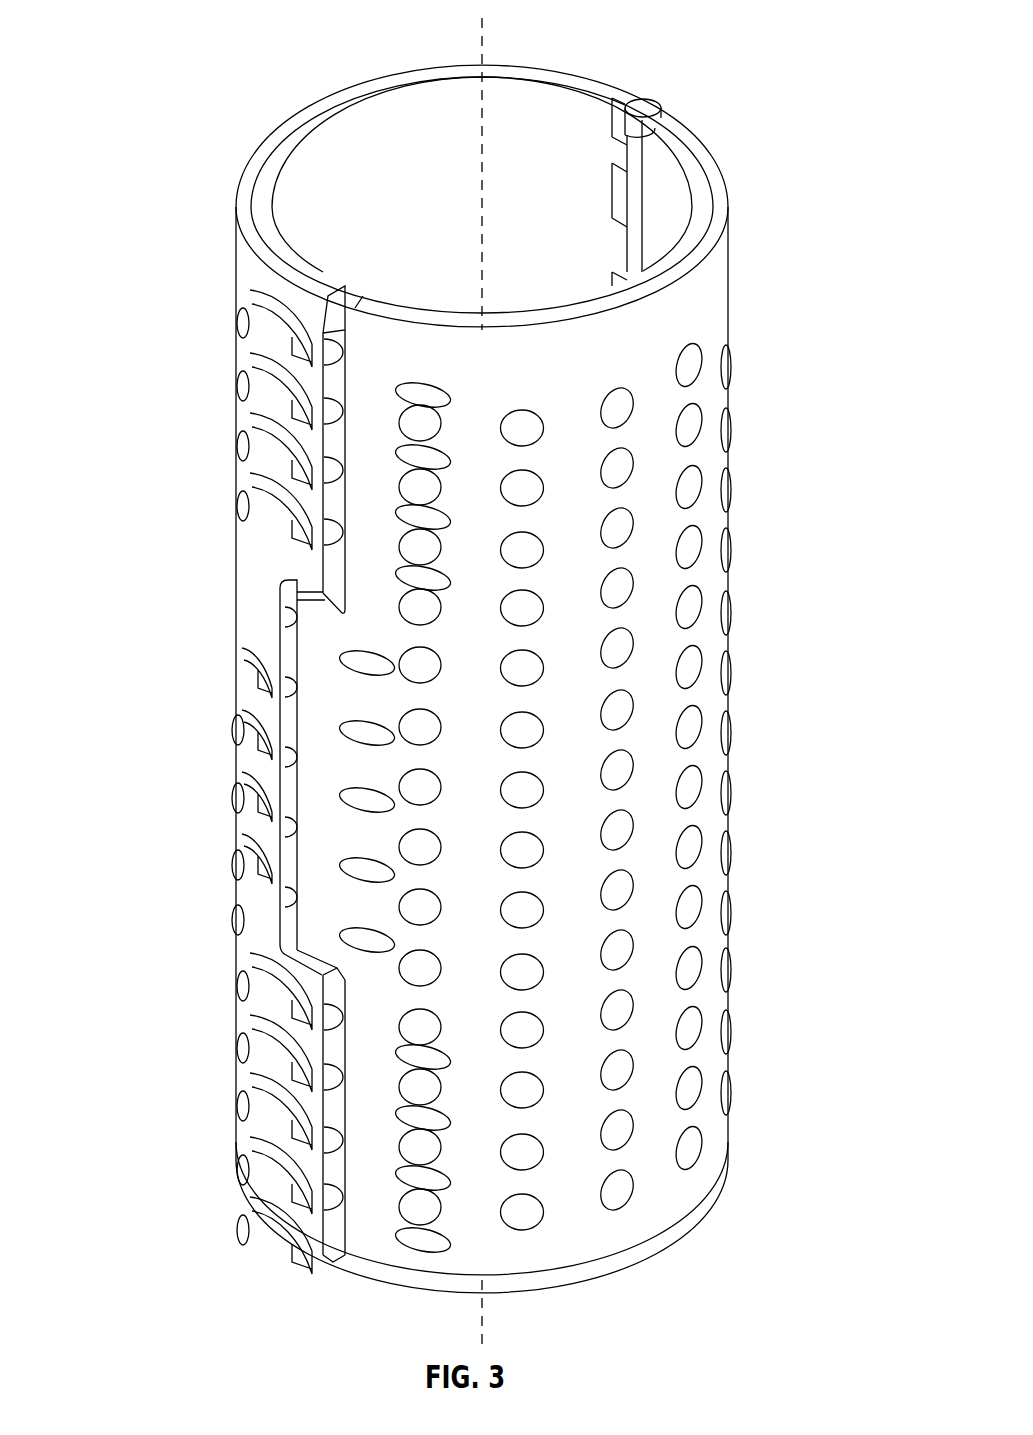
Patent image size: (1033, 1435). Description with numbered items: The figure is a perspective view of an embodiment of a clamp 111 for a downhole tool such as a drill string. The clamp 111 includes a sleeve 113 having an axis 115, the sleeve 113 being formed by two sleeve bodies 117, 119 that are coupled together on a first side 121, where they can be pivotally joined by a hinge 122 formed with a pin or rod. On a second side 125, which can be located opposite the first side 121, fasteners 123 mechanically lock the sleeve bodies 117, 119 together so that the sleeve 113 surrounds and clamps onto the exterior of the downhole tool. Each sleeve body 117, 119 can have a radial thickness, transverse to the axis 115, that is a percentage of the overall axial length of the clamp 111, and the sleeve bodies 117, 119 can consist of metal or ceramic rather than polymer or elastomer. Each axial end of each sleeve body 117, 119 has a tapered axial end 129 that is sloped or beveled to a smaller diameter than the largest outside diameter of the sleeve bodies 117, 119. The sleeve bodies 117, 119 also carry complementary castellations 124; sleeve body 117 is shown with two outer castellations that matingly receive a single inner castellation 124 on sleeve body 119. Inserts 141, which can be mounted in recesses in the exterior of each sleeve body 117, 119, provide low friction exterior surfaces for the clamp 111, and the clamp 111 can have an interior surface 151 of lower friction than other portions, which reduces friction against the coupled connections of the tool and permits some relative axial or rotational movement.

The clamp 111 is at (153, 170).
The sleeve 113 is at (193, 722).
The axis 115 is at (478, 40).
The sleeve body 117 is at (280, 580).
The sleeve body 119 is at (712, 588).
The first side 121 is at (638, 150).
The hinge 122 is at (648, 100).
The fasteners 123 is at (244, 307).
The castellations 124 is at (272, 668).
The second side 125 is at (333, 1258).
The tapered axial ends 129 is at (535, 65).
The inserts 141 is at (244, 378).
The interior surface 151 is at (582, 114).